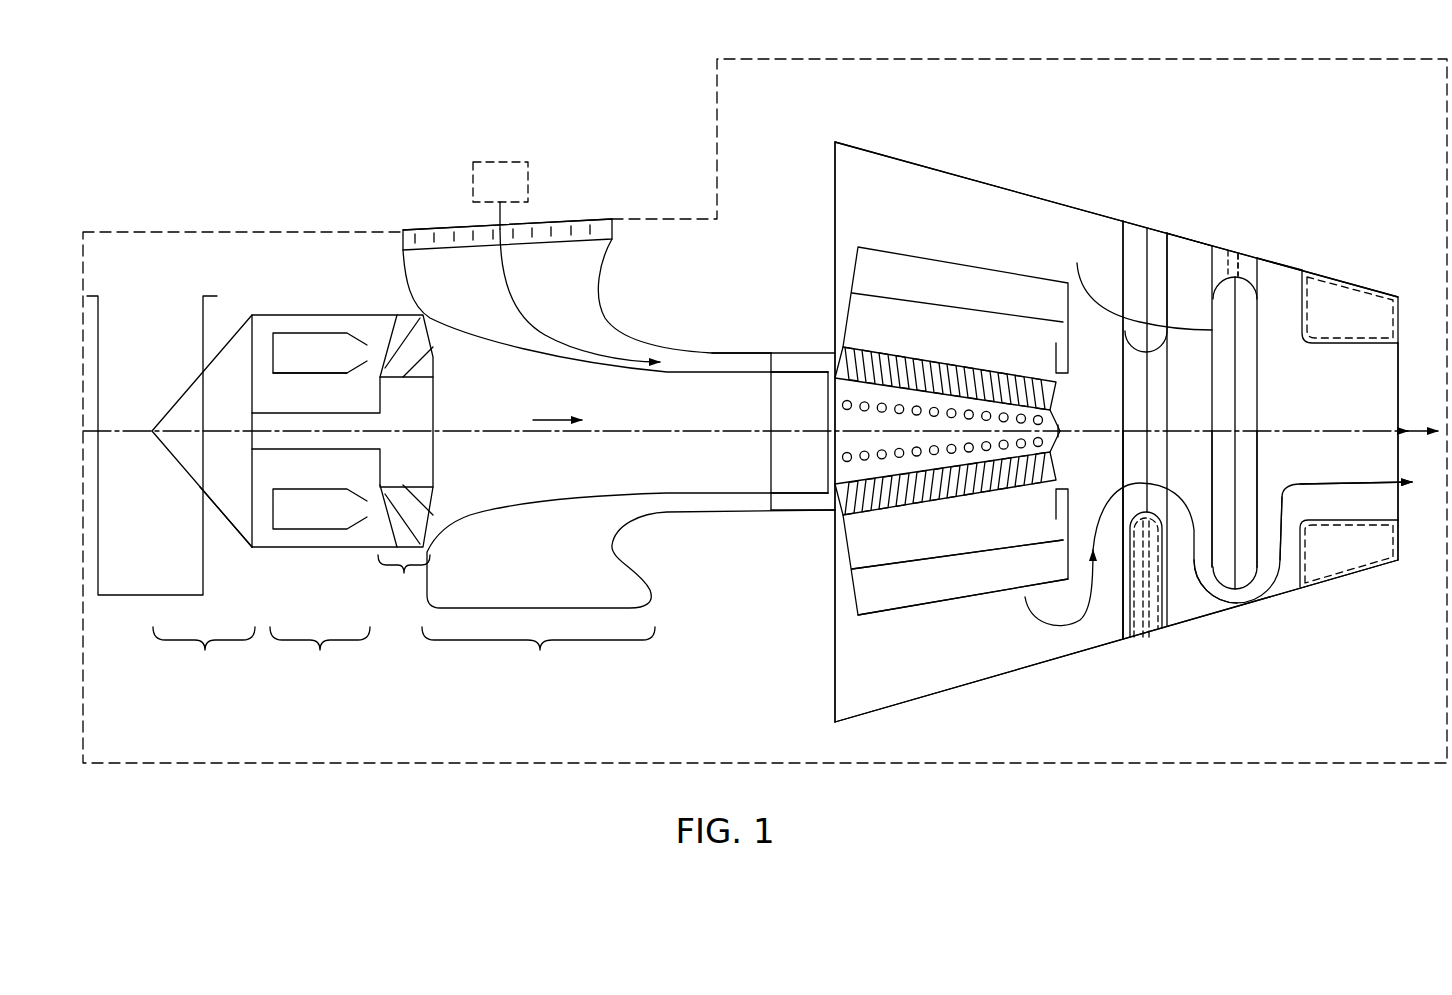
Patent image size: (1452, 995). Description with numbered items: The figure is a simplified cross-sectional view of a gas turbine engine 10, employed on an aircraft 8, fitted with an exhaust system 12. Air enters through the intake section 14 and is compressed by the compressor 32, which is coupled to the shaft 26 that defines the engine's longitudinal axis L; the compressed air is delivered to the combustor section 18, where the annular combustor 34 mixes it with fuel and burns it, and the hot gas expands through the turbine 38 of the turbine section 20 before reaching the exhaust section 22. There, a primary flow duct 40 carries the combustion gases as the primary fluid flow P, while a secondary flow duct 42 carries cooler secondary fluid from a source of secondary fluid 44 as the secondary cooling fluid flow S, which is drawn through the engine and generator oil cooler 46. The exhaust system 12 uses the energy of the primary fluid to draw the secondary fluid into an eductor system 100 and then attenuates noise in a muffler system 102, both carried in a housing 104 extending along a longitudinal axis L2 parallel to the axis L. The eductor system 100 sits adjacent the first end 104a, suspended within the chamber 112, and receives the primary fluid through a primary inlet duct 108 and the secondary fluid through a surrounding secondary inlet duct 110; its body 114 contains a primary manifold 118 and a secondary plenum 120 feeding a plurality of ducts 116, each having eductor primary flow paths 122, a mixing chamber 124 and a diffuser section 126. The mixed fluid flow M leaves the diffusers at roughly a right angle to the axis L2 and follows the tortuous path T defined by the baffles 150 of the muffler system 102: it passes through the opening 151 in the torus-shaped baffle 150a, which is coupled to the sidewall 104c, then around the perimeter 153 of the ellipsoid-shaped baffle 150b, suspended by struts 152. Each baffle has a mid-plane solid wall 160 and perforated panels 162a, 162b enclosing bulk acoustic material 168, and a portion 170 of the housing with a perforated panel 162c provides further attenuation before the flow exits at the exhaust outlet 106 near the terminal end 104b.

The aircraft 8 is at (717, 107).
The gas turbine engine 10 is at (273, 157).
The exhaust system 12 is at (1177, 160).
The intake section 14 is at (155, 317).
The combustor section 18 is at (293, 496).
The turbine section 20 is at (404, 580).
The exhaust section 22 is at (619, 448).
The shaft 26 is at (315, 420).
The compressor 32 is at (237, 520).
The annular combustor 34 is at (317, 340).
The turbine 38 is at (398, 330).
The primary flow duct 40 is at (772, 476).
The secondary flow duct 42 is at (705, 362).
The source of secondary fluid 44 is at (500, 195).
The engine and generator oil cooler 46 is at (606, 228).
The secondary cooling fluid flow S is at (538, 330).
The primary fluid flow P is at (540, 418).
The eductor system 100 is at (850, 617).
The muffler system 102 is at (1112, 627).
The housing 104 is at (1255, 190).
The first end 104a is at (835, 707).
The second, terminal end 104b is at (1400, 557).
The sidewall 104c is at (1223, 252).
The exhaust outlet 106 is at (1382, 502).
The primary inlet duct 108 is at (771, 366).
The secondary inlet duct 110 is at (777, 507).
The chamber 112 is at (900, 693).
The body 114 is at (1060, 425).
The plurality of ducts 116 is at (923, 163).
The primary manifold 118 is at (910, 468).
The secondary plenum 120 is at (807, 506).
The eductor primary flow paths 122 is at (945, 368).
The mixing chamber 124 is at (967, 537).
The diffuser section 126 is at (935, 595).
The plurality of baffles 150 is at (1212, 610).
The first baffle 150a is at (1180, 233).
The second baffle 150b is at (1263, 282).
The opening 151 is at (1130, 460).
The struts 152 is at (1243, 240).
The perimeter 153 is at (1255, 597).
The mid-plane solid wall 160 is at (1137, 220).
The first perforated panel 162a is at (1123, 273).
The second perforated panel 162b is at (1170, 305).
The perforated panel 162c is at (1313, 563).
The bulk acoustic material 168 is at (1367, 290).
The portion of the housing 170 is at (1298, 600).
The mixed fluid flow M is at (1030, 622).
The tortuous path T is at (1195, 597).
The longitudinal axis L is at (1412, 428).
The longitudinal axis L2 is at (1398, 443).